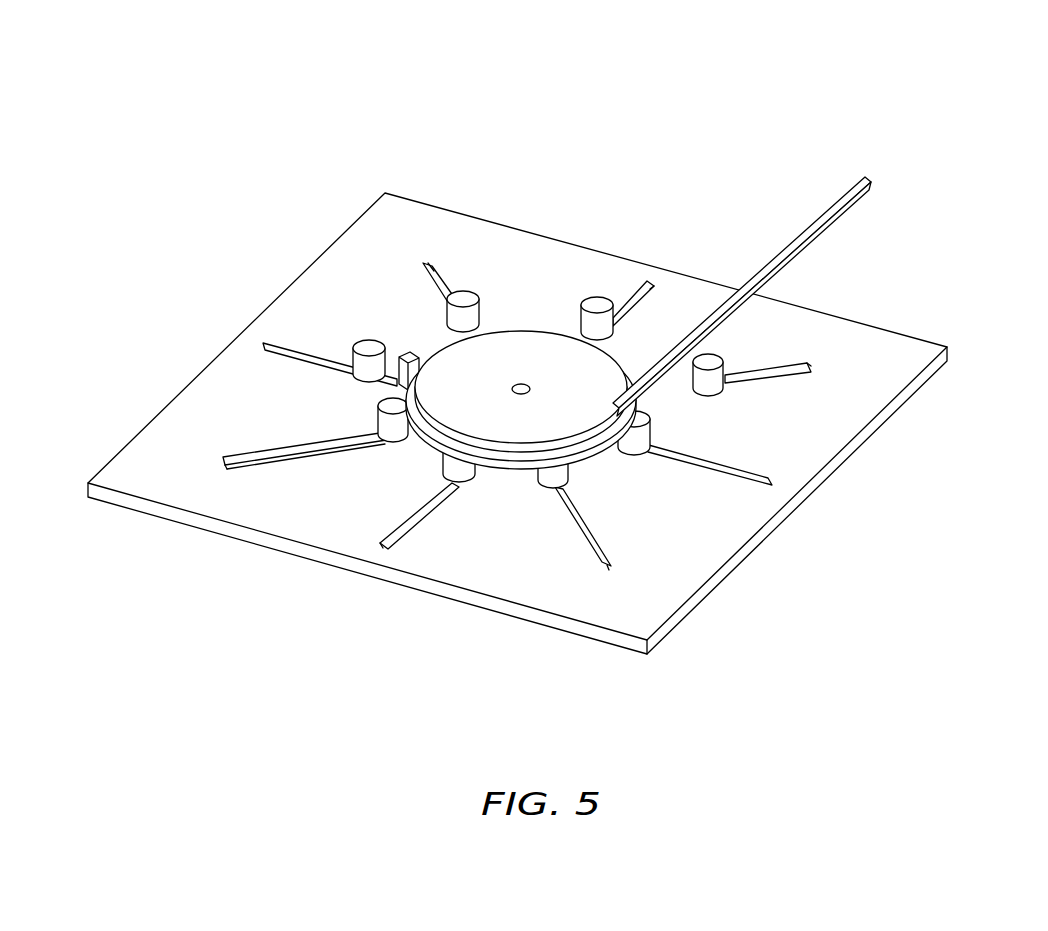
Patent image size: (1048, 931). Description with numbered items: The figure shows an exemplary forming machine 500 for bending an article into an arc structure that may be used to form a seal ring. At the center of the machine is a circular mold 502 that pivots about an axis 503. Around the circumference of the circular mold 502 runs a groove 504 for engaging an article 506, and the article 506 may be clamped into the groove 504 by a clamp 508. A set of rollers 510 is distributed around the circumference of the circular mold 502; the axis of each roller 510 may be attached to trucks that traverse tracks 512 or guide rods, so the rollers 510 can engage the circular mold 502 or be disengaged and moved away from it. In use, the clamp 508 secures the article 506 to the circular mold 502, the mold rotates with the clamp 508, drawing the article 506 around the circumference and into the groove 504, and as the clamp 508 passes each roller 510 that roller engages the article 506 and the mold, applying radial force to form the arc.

The forming machine 500 is at (338, 55).
The circular mold 502 is at (513, 342).
The axis 503 is at (519, 394).
The groove 504 is at (577, 452).
The article 506 is at (827, 212).
The clamp 508 is at (406, 356).
The rollers 510 is at (352, 358).
The tracks 512 is at (262, 343).